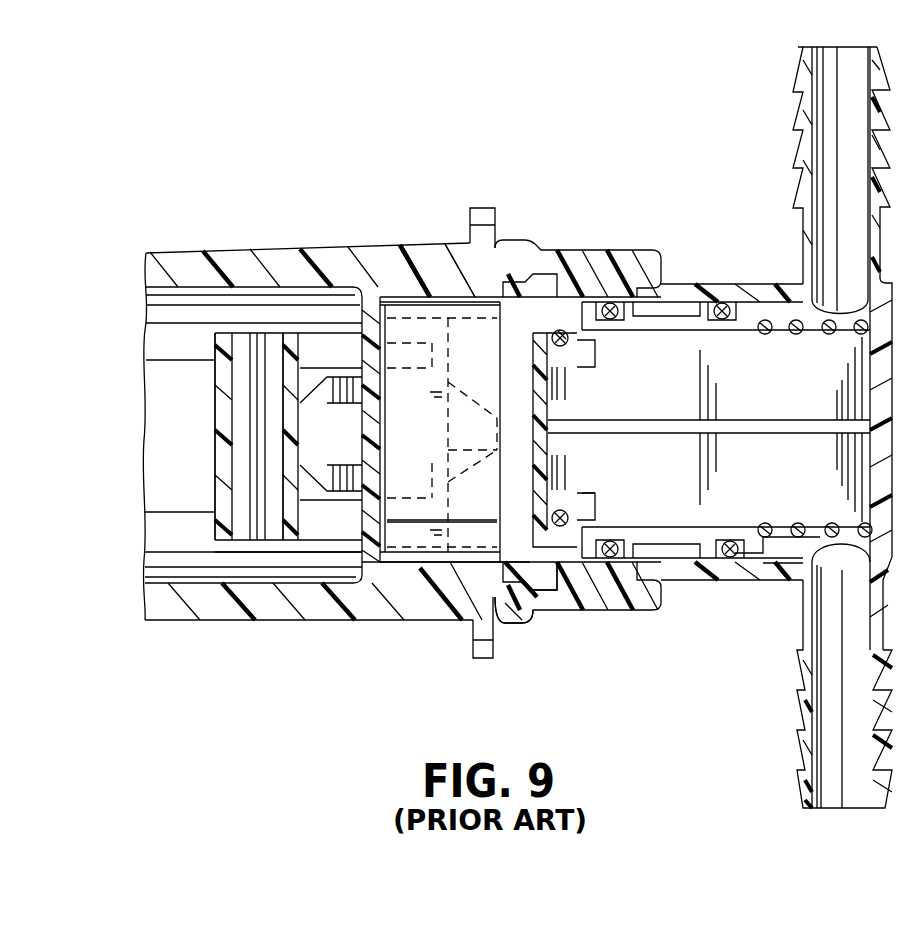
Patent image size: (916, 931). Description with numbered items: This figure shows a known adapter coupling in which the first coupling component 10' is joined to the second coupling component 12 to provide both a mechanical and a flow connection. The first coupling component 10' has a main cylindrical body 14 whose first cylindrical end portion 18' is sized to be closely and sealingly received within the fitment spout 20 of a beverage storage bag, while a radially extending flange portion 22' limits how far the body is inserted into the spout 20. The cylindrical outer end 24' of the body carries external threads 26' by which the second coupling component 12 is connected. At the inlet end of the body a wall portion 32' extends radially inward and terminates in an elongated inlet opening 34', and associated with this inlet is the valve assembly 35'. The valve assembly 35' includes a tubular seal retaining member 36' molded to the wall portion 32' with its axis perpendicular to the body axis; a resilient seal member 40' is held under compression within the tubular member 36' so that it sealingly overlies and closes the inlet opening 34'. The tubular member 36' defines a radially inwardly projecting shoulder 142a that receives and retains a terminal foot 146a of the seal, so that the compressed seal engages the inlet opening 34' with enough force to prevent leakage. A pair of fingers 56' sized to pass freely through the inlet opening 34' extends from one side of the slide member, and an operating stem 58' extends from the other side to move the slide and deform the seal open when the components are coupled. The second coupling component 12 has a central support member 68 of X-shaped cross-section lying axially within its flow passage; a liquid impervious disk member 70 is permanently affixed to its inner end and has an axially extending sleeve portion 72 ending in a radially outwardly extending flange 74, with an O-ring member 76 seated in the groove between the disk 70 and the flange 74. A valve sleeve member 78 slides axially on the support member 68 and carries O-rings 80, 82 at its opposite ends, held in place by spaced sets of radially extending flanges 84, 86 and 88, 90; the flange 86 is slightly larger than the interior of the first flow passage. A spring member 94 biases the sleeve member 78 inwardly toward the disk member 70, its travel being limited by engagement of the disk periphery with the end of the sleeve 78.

The first coupling component 10' is at (336, 158).
The second coupling component 12 is at (548, 200).
The main cylindrical body portion 14 is at (434, 645).
The first cylindrical end portion 18' is at (379, 486).
The fitment spout 20 is at (275, 600).
The radially extending flange portion 22' is at (493, 468).
The cylindrical outer end 24' is at (561, 621).
The external threads 26' is at (523, 639).
The wall portion 32' is at (292, 555).
The inlet opening 34' is at (343, 434).
The valve assembly 35' is at (132, 429).
The tubular seal retaining member 36' is at (137, 436).
The resilient seal member 40' is at (179, 436).
The fingers 56' is at (440, 380).
The operating stem 58' is at (539, 440).
The central support member 68 is at (773, 434).
The disk member 70 is at (550, 411).
The sleeve portion 72 is at (568, 500).
The radially outwardly extending flange 74 is at (604, 510).
The O-ring member 76 is at (572, 360).
The valve sleeve member 78 is at (677, 330).
The O-ring 80 is at (606, 302).
The O-ring 82 is at (722, 302).
The radially extending flange 84 is at (590, 562).
The radially extending flange 86 is at (628, 545).
The radially extending flange 88 is at (690, 560).
The radially extending flange 90 is at (740, 580).
The spring member 94 is at (815, 335).
The first radially inwardly projecting shoulder 142a is at (250, 345).
The first foot of seal member 146a is at (275, 526).